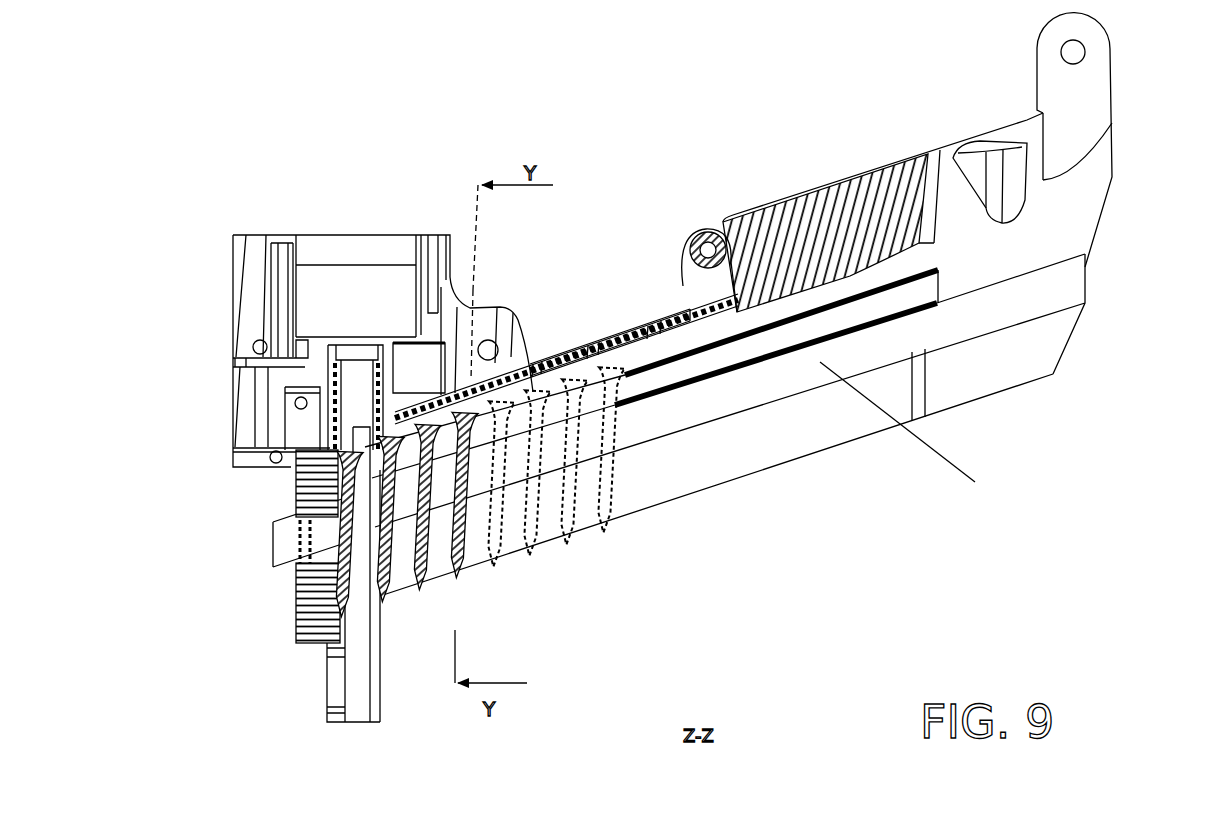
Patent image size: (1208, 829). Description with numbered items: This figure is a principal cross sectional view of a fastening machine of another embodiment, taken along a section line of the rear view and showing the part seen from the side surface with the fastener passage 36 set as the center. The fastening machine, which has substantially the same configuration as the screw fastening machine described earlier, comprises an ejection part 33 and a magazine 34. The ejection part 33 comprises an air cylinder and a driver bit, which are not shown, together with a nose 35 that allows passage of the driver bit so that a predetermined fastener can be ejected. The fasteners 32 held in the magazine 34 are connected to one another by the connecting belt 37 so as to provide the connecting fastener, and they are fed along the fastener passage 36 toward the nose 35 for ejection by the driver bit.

The ejection part 33 is at (216, 268).
The magazine 34 is at (836, 162).
The nose 35 is at (350, 675).
The fastener passage 36 is at (983, 250).
The connecting belt 37 is at (914, 433).
The fastener 32 is at (463, 533).